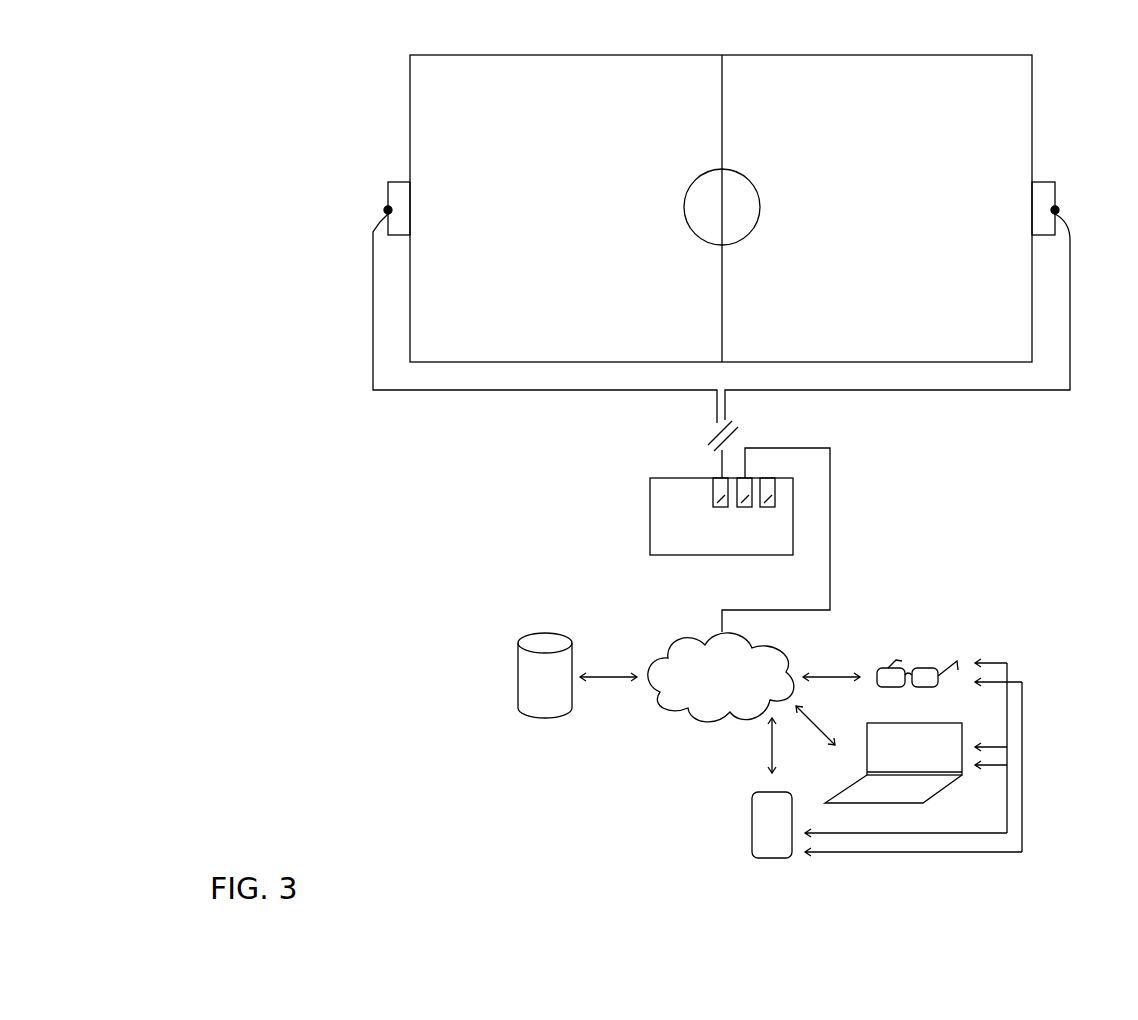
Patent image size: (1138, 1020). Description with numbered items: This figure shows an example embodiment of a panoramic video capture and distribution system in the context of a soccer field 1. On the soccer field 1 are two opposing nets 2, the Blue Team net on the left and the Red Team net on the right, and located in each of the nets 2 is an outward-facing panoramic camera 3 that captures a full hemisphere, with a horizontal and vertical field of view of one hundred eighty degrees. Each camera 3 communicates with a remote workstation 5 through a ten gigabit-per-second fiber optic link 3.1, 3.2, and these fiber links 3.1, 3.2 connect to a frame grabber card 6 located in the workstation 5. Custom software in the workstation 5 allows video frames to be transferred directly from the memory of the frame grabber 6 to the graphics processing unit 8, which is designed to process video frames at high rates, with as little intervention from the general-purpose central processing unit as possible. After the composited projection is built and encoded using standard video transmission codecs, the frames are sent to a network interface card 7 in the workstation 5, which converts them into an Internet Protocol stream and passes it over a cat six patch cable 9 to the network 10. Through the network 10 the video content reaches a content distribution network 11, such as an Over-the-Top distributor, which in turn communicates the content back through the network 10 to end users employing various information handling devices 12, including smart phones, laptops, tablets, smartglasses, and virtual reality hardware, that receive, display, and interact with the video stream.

The soccer field 1 is at (755, 73).
The net 2 is at (405, 210).
The panoramic camera 3 is at (382, 210).
The fiber optic link 3.1 is at (366, 390).
The fiber optic link 3.2 is at (1078, 390).
The remote workstation 5 is at (650, 515).
The frame grabber card 6 is at (721, 507).
The network interface card 7 is at (745, 507).
The graphics processing unit 8 is at (768, 507).
The cat 6 patch cable 9 is at (843, 523).
The network 10 is at (721, 677).
The content distribution network 11 is at (545, 675).
The information handling devices 12 is at (1032, 755).